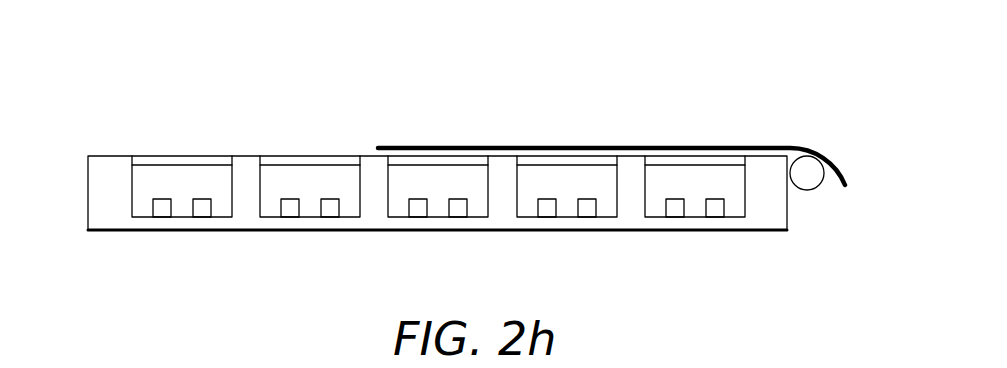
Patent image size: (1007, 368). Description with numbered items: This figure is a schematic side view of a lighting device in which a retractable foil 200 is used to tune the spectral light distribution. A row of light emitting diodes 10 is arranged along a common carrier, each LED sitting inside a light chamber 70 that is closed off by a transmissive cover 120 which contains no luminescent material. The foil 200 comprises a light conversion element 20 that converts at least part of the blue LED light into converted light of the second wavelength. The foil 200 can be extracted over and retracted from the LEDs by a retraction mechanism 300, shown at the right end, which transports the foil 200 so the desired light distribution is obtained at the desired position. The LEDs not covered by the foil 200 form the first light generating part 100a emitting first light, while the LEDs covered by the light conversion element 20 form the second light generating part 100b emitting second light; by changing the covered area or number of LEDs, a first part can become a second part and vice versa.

The first light generating part 100a is at (305, 122).
The second light generating part 100b is at (465, 120).
The light conversion element 20 is at (547, 147).
The transmissive cover 120 is at (165, 156).
The light chamber 70 is at (400, 188).
The light emitting diode 10 is at (548, 199).
The foil 200 is at (713, 146).
The retraction mechanism 300 is at (826, 129).